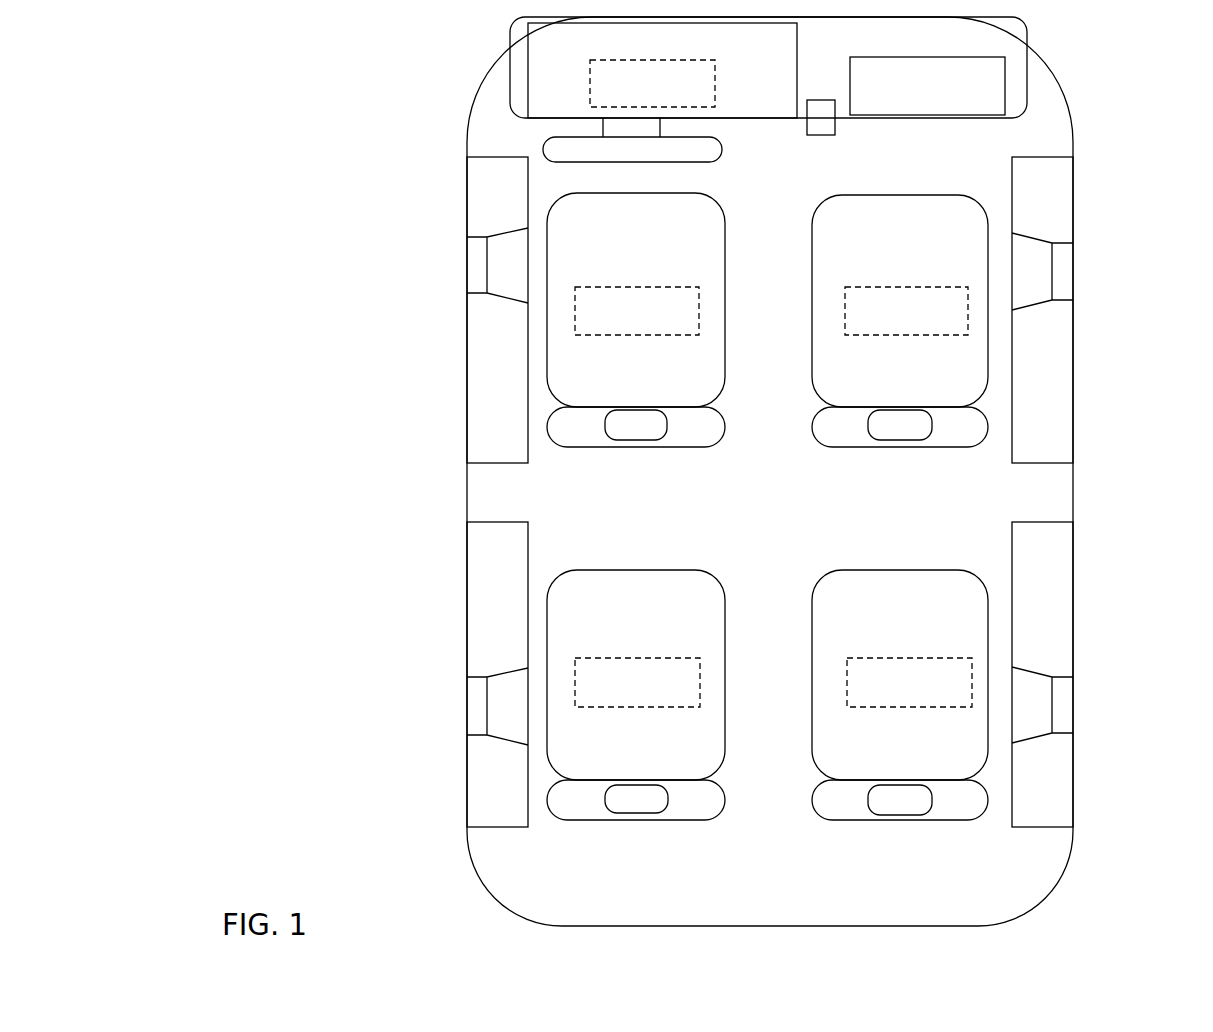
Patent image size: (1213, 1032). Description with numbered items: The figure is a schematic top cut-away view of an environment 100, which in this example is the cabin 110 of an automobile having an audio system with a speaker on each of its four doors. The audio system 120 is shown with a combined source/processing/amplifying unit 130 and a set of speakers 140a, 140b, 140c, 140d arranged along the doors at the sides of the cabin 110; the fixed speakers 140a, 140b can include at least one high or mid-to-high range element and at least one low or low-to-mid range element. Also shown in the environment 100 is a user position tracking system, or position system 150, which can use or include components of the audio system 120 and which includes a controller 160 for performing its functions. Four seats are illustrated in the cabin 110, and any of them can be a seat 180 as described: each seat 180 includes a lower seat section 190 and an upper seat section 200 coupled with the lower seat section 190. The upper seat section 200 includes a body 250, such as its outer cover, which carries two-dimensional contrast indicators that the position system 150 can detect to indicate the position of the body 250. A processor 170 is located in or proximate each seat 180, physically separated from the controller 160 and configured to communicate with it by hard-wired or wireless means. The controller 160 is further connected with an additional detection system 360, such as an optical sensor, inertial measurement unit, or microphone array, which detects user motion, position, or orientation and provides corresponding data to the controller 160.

The environment 100 is at (322, 108).
The cabin 110 is at (773, 531).
The audio system 120 is at (1080, 70).
The combined source/processing/amplifying unit 130 is at (992, 101).
The speaker 140a is at (505, 292).
The speaker 140b is at (1033, 297).
The speaker 140c is at (505, 682).
The speaker 140d is at (1035, 680).
The position system 150 is at (780, 56).
The controller 160 is at (695, 97).
The processor 170 is at (678, 326).
The seat 180 is at (779, 519).
The lower seat section 190 is at (655, 251).
The upper seat section 200 is at (583, 461).
The body 250 is at (722, 410).
The additional detection system 360 is at (824, 92).